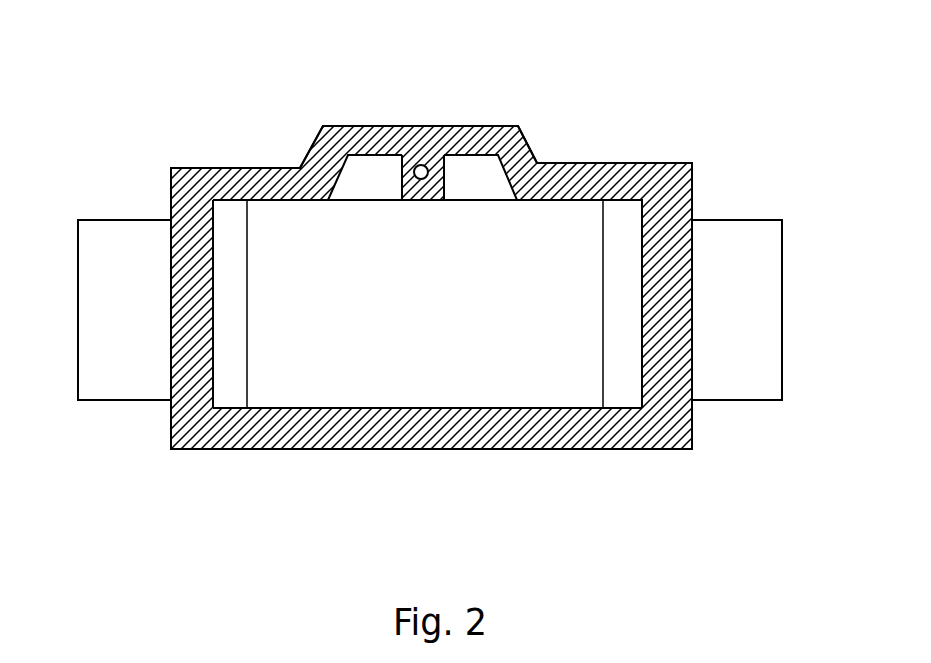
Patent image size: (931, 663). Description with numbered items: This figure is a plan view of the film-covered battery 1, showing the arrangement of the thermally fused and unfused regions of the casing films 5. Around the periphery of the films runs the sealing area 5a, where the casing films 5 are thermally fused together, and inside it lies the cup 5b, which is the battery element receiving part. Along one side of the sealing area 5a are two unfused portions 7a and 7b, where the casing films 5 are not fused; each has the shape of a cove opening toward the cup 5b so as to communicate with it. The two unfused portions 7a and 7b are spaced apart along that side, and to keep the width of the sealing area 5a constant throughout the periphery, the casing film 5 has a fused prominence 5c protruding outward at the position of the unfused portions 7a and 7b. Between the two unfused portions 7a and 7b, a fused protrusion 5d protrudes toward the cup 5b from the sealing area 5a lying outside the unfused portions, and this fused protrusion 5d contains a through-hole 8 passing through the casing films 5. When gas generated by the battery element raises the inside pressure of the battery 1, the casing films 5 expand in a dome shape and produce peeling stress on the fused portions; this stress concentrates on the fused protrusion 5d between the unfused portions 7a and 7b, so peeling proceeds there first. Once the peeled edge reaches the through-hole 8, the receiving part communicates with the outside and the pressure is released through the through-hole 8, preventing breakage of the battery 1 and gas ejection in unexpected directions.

The film-covered battery 1 is at (115, 157).
The casing film 5 is at (693, 435).
The sealing area 5a is at (230, 428).
The cup 5b is at (432, 385).
The fused prominence 5c is at (528, 150).
The fused protrusion 5d is at (445, 178).
The unfused portion 7a is at (360, 177).
The unfused portion 7b is at (487, 177).
The through-hole 8 is at (421, 165).